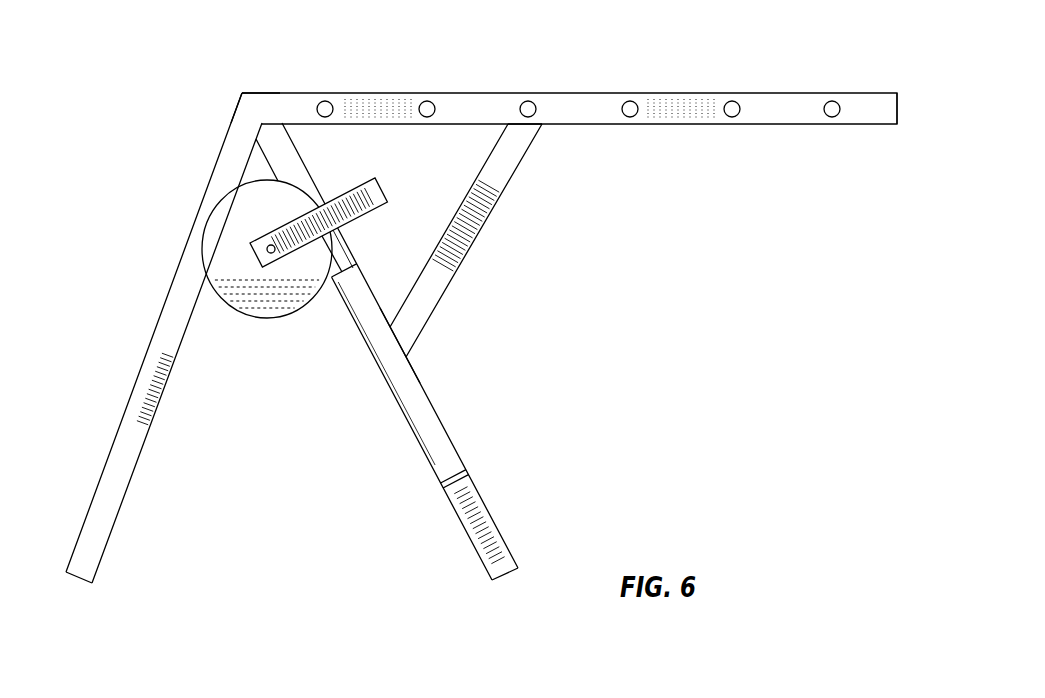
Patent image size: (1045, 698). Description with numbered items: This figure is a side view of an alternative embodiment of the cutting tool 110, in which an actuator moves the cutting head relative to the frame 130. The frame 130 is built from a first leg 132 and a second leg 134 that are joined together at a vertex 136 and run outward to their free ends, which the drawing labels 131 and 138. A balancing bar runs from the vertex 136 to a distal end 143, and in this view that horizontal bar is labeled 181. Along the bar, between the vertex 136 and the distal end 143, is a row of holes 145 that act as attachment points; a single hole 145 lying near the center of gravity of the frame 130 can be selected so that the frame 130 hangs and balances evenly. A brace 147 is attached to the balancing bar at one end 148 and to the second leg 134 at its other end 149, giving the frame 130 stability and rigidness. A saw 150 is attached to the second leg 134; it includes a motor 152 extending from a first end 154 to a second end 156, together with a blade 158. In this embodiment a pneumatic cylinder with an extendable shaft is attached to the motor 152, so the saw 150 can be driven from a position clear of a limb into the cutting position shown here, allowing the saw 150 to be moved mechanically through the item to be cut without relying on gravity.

The cutting tool 110 is at (747, 50).
The frame 130 is at (78, 366).
The foot end of rear leg 131 is at (508, 577).
The first leg 132 is at (429, 470).
The second leg 134 is at (90, 503).
The vertex 136 is at (242, 92).
The foot end of front leg 138 is at (80, 583).
The distal end 143 is at (897, 105).
The holes 145 is at (831, 118).
The brace 147 is at (485, 225).
The end of brace 148 is at (541, 125).
The end of brace 149 is at (410, 352).
The saw 150 is at (308, 341).
The motor 152 is at (370, 214).
The first end 154 is at (380, 198).
The second end 156 is at (256, 258).
The blade 158 is at (248, 320).
The top rail 181 is at (489, 91).